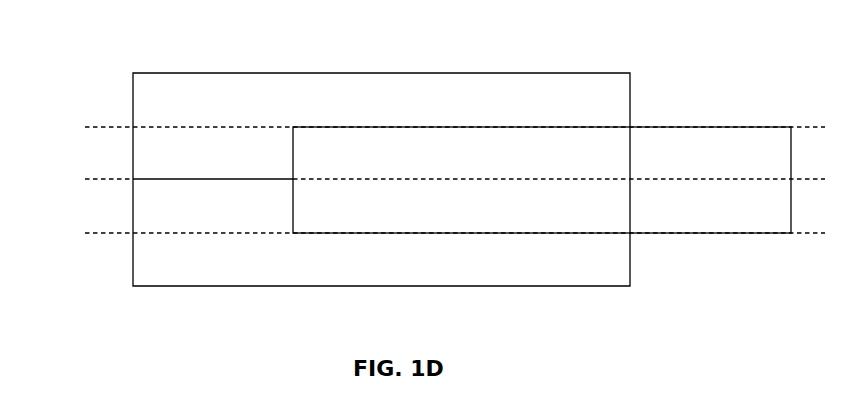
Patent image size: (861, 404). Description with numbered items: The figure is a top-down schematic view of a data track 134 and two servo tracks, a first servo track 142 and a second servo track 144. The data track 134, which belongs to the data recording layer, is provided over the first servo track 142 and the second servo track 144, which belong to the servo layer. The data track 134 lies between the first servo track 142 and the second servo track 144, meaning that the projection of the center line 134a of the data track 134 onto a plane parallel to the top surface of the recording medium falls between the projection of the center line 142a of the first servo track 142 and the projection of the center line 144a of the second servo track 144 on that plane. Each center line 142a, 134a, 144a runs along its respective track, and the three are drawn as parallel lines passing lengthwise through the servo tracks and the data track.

The first servo track 142 is at (201, 80).
The second servo track 144 is at (200, 279).
The data track 134 is at (672, 127).
The center line of the first servo track 142a is at (426, 125).
The center line of the data track 134a is at (426, 178).
The center line of the second servo track 144a is at (426, 232).